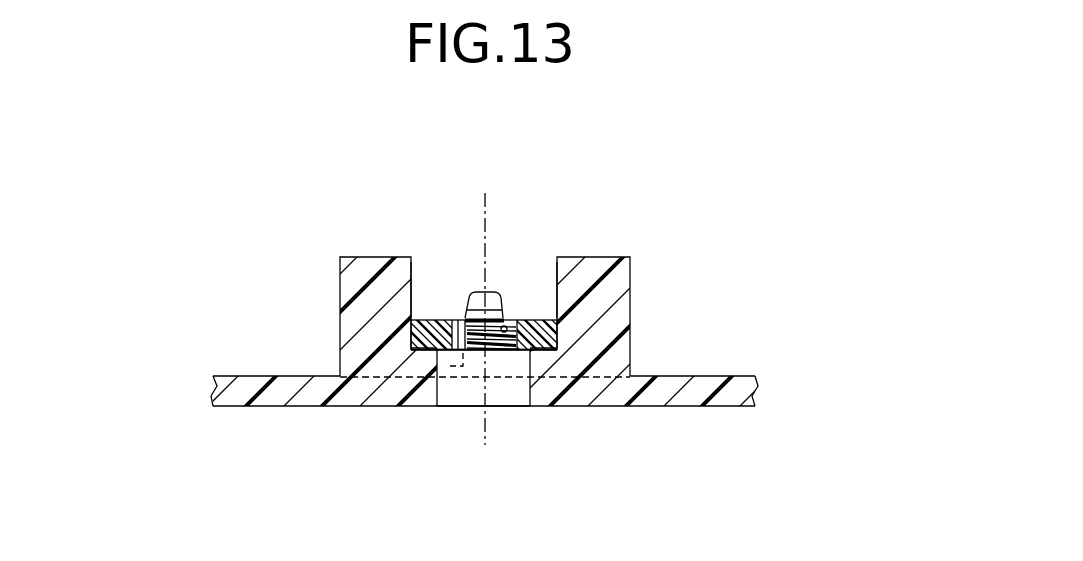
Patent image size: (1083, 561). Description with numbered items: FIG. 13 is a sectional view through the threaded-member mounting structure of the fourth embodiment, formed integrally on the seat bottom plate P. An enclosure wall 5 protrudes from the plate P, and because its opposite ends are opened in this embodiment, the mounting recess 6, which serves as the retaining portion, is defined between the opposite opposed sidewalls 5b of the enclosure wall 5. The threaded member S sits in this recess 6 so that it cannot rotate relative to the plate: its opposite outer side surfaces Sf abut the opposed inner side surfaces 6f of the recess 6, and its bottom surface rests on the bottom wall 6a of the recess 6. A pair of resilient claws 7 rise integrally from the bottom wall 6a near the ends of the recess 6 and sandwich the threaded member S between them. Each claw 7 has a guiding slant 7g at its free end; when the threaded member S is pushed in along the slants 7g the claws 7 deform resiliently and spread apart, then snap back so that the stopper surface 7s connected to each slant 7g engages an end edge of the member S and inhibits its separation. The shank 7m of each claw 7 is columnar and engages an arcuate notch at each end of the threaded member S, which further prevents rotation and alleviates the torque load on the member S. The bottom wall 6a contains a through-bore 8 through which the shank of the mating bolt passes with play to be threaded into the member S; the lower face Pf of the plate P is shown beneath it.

The enclosure wall 5 is at (358, 252).
The sidewalls of the enclosure wall 5b is at (350, 320).
The mounting recess 6 is at (430, 338).
The inner side surfaces of the recess 6f is at (422, 320).
The bottom wall of the mounting recess 6a is at (543, 407).
The resilient claw 7 is at (472, 285).
The guiding slant 7g is at (493, 292).
The stopper surface 7s is at (506, 325).
The shank of the resilient claw 7m is at (455, 370).
The through-bore 8 is at (531, 377).
The threaded member S is at (517, 358).
The outer side surfaces of the threaded member Sf is at (411, 342).
The plate bottom surface Pf is at (575, 407).
The seat bottom plate P is at (746, 371).